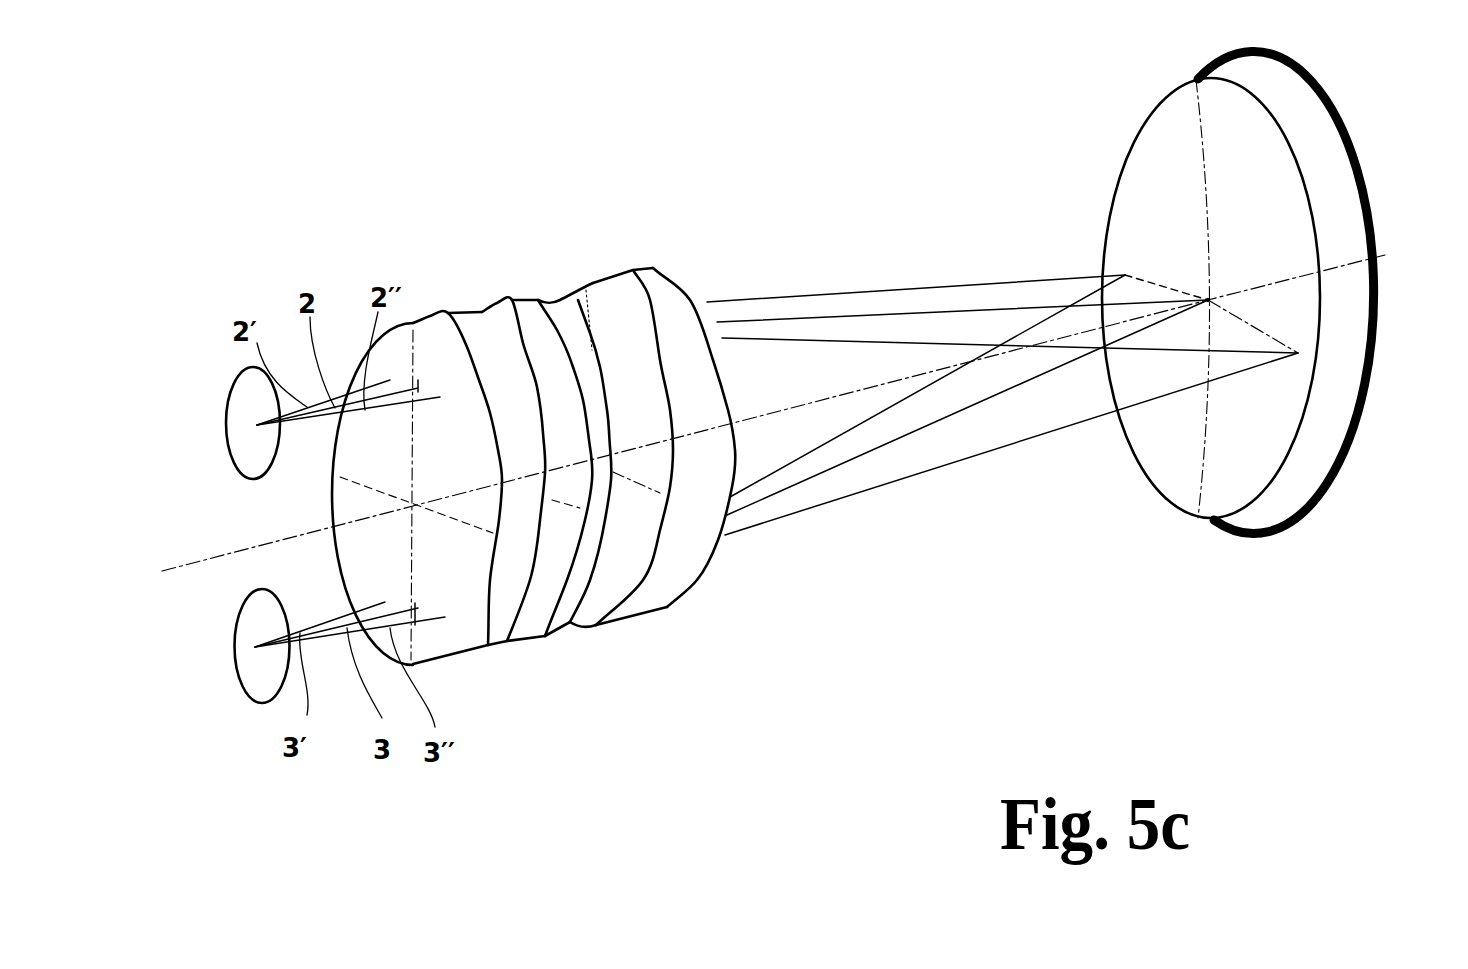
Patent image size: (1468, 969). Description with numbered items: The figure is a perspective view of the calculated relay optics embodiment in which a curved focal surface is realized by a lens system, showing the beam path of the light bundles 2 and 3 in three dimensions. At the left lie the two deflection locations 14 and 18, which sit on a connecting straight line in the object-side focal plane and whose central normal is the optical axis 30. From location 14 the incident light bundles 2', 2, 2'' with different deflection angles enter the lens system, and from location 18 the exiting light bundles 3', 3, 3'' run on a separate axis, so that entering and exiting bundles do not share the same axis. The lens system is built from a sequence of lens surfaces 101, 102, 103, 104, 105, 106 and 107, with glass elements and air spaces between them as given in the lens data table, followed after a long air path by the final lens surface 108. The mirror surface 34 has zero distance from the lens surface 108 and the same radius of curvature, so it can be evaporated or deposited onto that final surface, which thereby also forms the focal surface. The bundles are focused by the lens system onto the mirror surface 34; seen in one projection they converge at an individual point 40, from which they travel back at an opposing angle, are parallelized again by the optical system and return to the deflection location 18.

The deflection location 14 is at (247, 435).
The deflection location 18 is at (255, 647).
The incident light bundle 2' is at (957, 248).
The incident light bundle 2 is at (962, 244).
The incident light bundle 2'' is at (1010, 281).
The light ray of second beam 3' is at (927, 443).
The exiting light bundle 3 is at (967, 460).
The light ray of second beam 3'' is at (1011, 485).
The lens surface 101 is at (338, 493).
The lens surface 102 is at (485, 650).
The lens surface 103 is at (528, 332).
The lens surface 104 is at (577, 315).
The lens surface 105 is at (570, 625).
The lens surface 106 is at (700, 583).
The optical axis 30 is at (1392, 252).
The mirror surface 34 is at (1360, 162).
The individual point 40 is at (1208, 300).
The lens surface 107 is at (1150, 472).
The lens surface 108 is at (1325, 493).